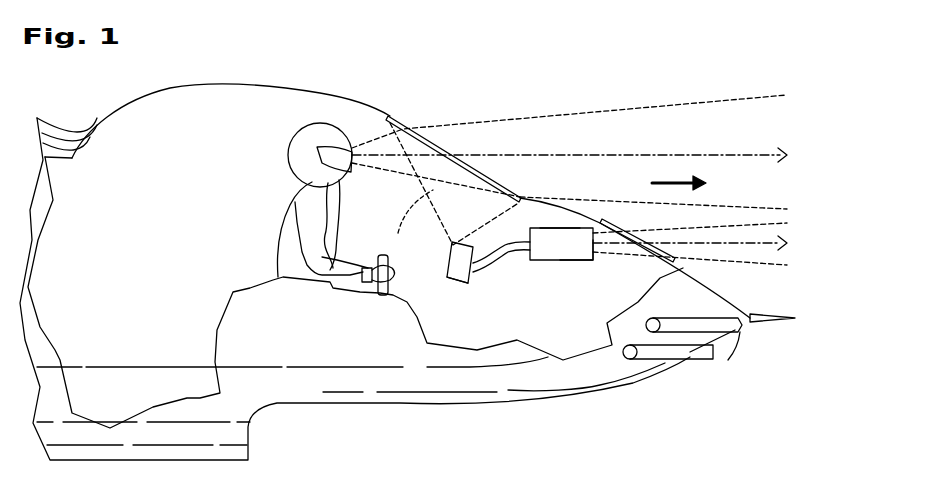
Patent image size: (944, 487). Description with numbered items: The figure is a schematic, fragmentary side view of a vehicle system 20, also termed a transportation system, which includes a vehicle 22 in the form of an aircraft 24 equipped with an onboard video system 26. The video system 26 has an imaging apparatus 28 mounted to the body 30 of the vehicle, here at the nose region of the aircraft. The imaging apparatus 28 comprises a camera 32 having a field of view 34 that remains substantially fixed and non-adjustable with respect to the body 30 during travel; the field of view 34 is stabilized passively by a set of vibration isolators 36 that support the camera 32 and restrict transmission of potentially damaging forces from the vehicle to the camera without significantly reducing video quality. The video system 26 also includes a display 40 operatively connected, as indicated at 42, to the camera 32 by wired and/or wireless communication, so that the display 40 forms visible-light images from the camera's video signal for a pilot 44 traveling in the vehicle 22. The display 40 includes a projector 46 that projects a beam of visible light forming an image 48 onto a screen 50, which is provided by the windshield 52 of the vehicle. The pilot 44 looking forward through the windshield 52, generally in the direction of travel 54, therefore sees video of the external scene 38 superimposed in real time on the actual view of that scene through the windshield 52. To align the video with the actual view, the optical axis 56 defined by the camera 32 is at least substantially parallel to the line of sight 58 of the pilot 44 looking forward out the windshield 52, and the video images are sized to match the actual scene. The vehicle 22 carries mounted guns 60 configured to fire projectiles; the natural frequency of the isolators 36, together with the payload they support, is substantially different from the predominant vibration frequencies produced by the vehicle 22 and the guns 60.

The vehicle system 20 is at (182, 53).
The vehicle 22 is at (235, 73).
The aircraft 24 is at (293, 84).
The video system 26 is at (504, 271).
The imaging apparatus 28 is at (567, 262).
The body 30 is at (568, 338).
The camera 32 is at (588, 259).
The field of view 34 is at (703, 258).
The vibration isolators 36 is at (558, 228).
The external scene 38 is at (780, 128).
The display 40 is at (448, 279).
The operative connection 42 is at (487, 266).
The pilot 44 is at (280, 217).
The projector 46 is at (460, 272).
The image 48 is at (418, 226).
The screen 50 is at (452, 165).
The windshield 52 is at (476, 181).
The direction of travel 54 is at (667, 181).
The optical axis 56 is at (738, 243).
The line of sight 58 is at (536, 160).
The guns 60 is at (708, 358).